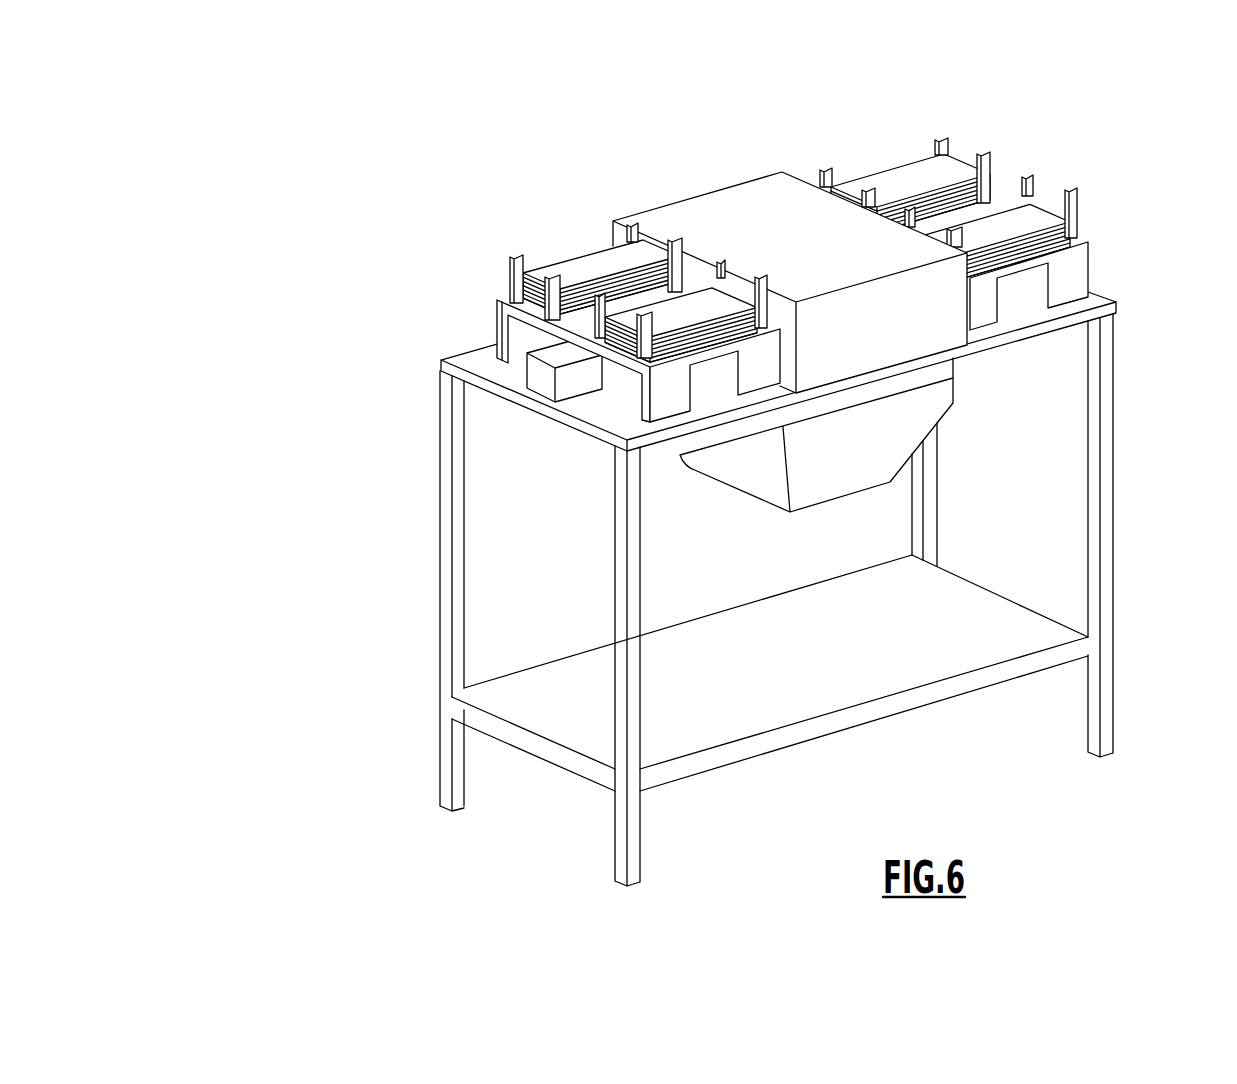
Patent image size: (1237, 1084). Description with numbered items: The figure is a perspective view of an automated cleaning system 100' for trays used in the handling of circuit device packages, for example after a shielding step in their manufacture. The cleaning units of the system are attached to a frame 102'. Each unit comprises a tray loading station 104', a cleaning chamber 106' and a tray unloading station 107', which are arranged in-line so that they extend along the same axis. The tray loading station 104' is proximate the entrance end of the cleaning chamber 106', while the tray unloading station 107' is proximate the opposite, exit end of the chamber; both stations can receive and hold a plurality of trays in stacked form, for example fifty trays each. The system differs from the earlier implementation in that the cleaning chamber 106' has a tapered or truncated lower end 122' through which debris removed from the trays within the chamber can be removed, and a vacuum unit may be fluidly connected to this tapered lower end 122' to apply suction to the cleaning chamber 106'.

The automated cleaning system 100' is at (702, 490).
The frame 102' is at (704, 589).
The tray loading station 104' is at (553, 322).
The cleaning chamber 106' is at (790, 256).
The tray unloading station 107' is at (1012, 234).
The tapered or truncated lower end 122' is at (861, 451).